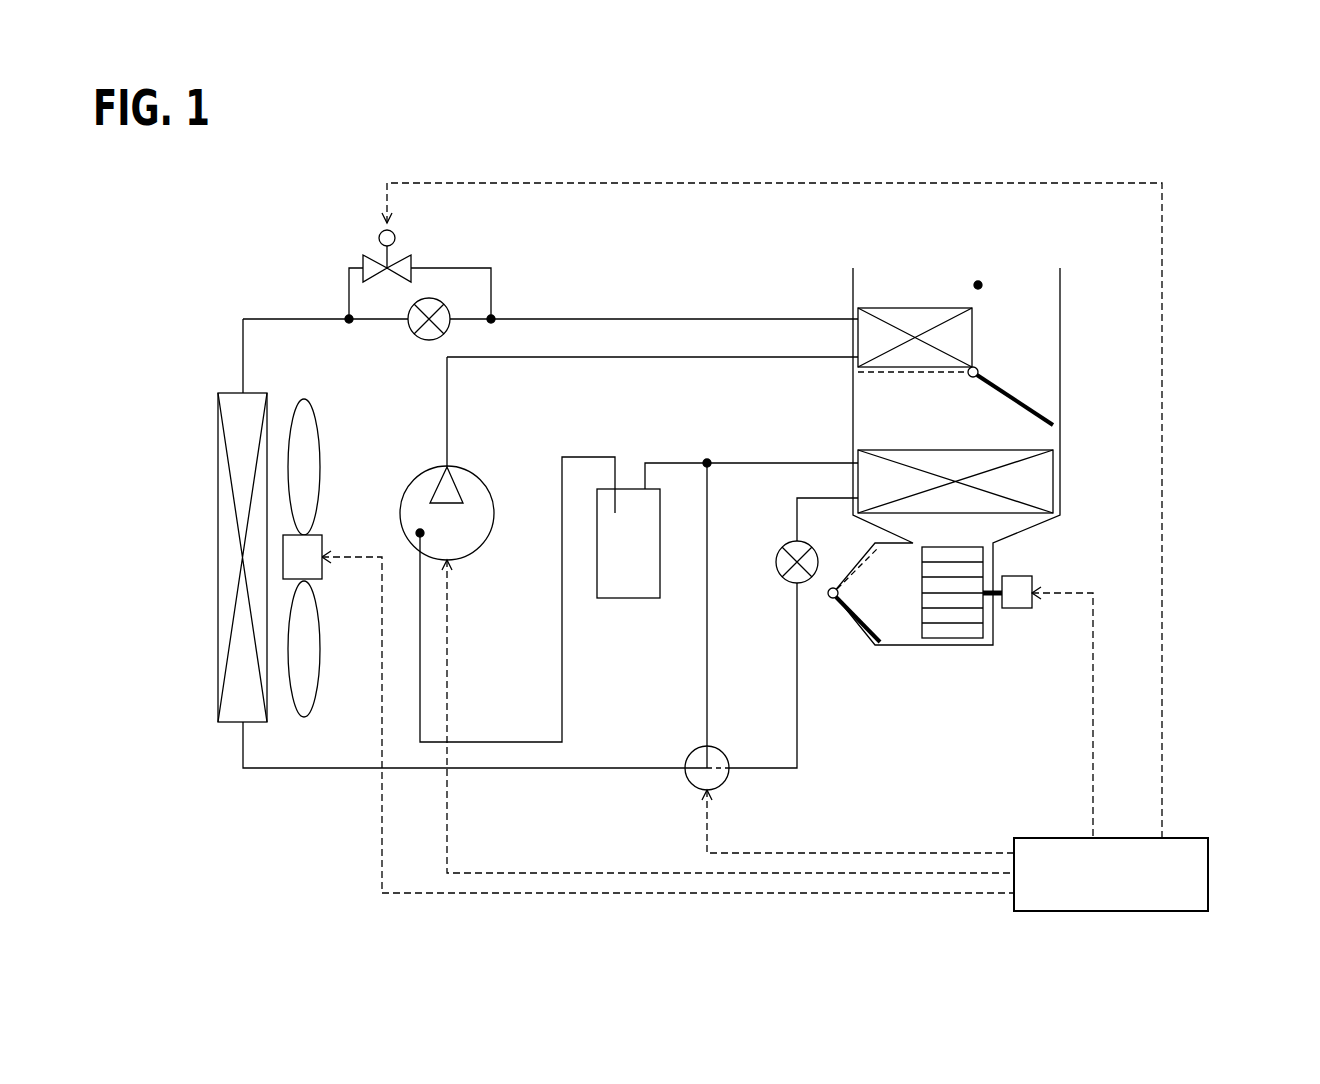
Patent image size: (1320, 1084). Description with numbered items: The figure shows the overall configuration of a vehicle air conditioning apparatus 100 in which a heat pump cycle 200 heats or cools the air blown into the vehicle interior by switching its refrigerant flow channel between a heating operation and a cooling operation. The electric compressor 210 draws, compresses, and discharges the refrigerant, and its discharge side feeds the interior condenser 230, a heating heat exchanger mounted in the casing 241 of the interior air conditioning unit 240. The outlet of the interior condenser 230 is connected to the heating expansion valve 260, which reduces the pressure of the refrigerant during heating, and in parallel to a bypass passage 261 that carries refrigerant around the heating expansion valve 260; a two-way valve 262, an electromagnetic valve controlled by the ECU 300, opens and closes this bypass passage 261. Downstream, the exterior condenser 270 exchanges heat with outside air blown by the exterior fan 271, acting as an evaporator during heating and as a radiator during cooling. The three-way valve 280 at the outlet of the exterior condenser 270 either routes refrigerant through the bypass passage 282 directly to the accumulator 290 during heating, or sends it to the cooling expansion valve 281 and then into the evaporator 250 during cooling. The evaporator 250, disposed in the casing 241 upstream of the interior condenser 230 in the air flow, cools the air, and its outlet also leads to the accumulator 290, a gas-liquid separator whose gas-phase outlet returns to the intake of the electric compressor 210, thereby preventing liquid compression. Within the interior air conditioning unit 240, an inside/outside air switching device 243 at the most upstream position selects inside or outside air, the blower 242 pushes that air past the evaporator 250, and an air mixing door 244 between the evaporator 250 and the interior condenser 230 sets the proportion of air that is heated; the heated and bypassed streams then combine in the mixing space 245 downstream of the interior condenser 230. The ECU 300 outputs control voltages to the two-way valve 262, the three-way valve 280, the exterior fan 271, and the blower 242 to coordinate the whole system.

The air conditioning apparatus 100 is at (906, 157).
The heat pump cycle 200 is at (708, 292).
The electric compressor 210 is at (480, 478).
The interior condenser 230 is at (912, 308).
The interior air conditioning unit 240 is at (1074, 312).
The casing 241 is at (945, 645).
The blower 242 is at (1018, 610).
The inside/outside air switching device 243 is at (870, 625).
The air mixing door 244 is at (1030, 400).
The mixing space 245 is at (978, 285).
The evaporator 250 is at (1060, 480).
The heating expansion valve 260 is at (418, 336).
The bypass passage 261 is at (471, 268).
The two-way valve 262 is at (378, 236).
The exterior condenser 270 is at (218, 463).
The exterior fan 271 is at (320, 655).
The three-way valve 280 is at (720, 748).
The cooling expansion valve 281 is at (775, 555).
The bypass passage 282 is at (712, 637).
The accumulator 290 is at (627, 600).
The ECU 300 is at (1208, 870).